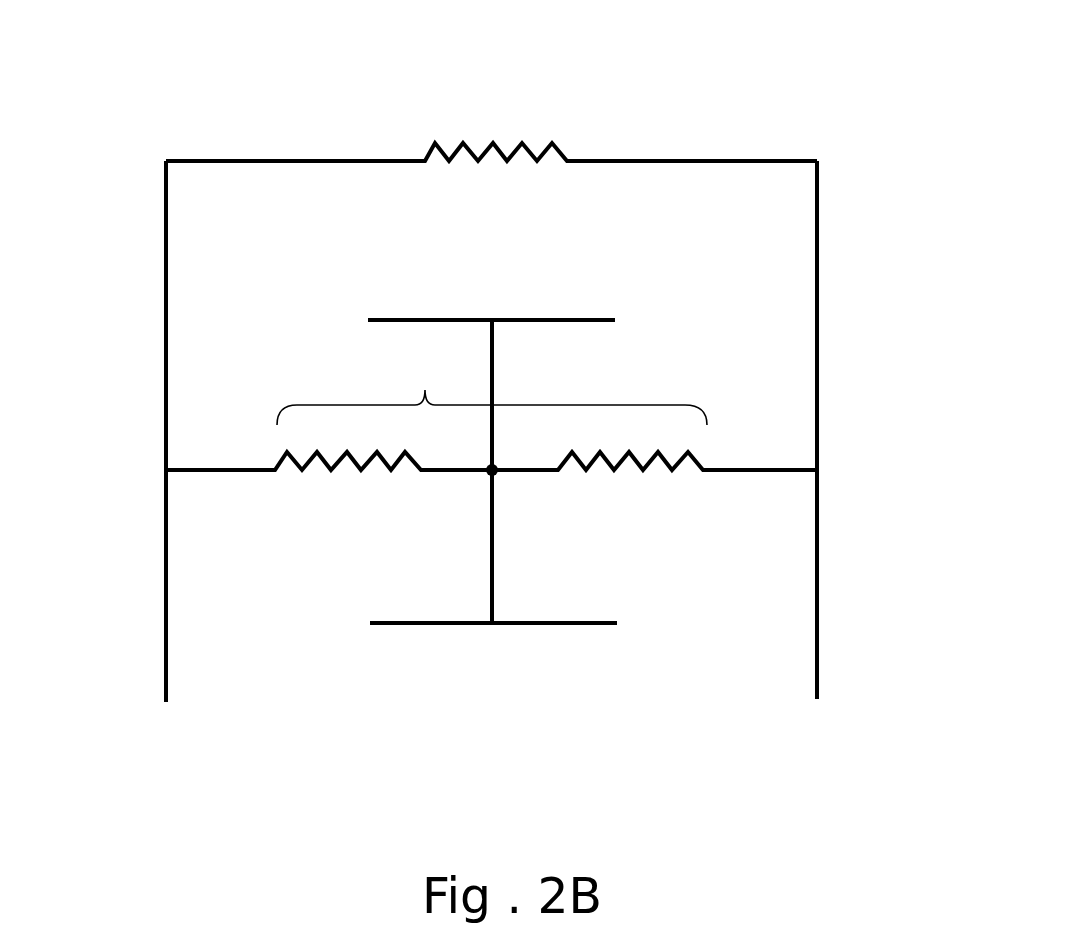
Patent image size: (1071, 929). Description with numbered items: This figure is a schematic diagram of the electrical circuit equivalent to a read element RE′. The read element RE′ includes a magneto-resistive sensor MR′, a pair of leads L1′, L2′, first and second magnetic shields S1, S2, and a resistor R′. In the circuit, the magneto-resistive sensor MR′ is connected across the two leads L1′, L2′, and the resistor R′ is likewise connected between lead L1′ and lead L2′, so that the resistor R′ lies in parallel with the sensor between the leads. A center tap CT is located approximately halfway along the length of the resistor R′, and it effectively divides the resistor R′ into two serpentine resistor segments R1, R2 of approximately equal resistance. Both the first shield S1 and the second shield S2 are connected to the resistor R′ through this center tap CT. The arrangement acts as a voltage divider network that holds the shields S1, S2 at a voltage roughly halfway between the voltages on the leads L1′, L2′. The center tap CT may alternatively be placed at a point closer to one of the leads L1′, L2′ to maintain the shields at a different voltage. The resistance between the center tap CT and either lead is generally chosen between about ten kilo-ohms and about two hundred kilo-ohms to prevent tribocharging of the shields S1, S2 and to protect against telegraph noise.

The magneto-resistive sensor MR′ is at (468, 148).
The read element RE′ is at (758, 73).
The first magnetic shield S1 is at (475, 318).
The second magnetic shield S2 is at (438, 625).
The resistor R′ is at (425, 390).
The serpentine resistor segment R1 is at (325, 460).
The serpentine resistor segment R2 is at (640, 462).
The center tap CT is at (497, 475).
The lead L1′ is at (166, 635).
The lead L2′ is at (819, 568).